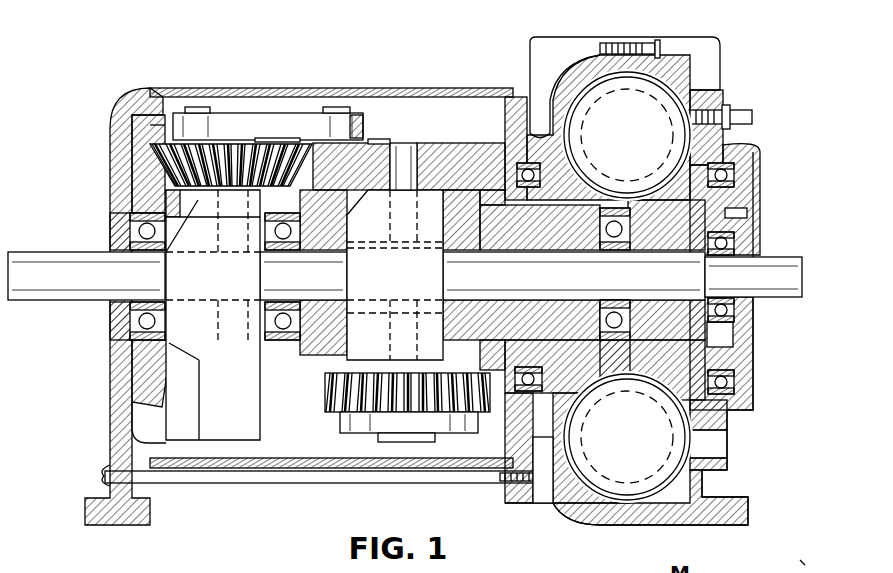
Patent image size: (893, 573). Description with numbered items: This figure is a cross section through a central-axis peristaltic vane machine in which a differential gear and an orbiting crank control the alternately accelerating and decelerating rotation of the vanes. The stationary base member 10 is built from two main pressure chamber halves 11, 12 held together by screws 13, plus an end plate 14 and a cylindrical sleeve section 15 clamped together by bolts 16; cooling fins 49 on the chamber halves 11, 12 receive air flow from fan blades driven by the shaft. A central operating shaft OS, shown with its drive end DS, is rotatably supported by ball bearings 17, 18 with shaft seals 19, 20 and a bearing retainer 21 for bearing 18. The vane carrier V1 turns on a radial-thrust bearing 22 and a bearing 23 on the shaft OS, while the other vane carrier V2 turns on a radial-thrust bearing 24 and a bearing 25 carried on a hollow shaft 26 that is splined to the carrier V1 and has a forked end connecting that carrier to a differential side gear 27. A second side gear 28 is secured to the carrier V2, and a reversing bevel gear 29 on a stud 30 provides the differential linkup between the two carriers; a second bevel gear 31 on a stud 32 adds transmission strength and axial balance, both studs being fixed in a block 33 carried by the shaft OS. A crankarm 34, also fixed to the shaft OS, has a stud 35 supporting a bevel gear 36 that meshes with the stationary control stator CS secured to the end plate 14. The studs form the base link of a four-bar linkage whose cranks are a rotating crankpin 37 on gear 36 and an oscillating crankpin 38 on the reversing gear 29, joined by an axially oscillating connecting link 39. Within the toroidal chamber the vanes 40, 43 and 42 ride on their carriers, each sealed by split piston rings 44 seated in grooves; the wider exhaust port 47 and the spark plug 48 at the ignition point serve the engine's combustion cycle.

The base member 10 is at (748, 490).
The main pressure chamber half 11 is at (735, 90).
The main pressure chamber half 12 is at (525, 92).
The screws 13 is at (657, 48).
The end plate 14 is at (110, 385).
The sleeve or cylindrical section 15 is at (400, 88).
The bolts 16 is at (238, 485).
The ball bearing 17 is at (110, 193).
The ball bearing 18 is at (765, 316).
The shaft seal 19 is at (105, 318).
The shaft seal 20 is at (770, 242).
The bearing retainer 21 is at (773, 240).
The radial-thrust bearing 22 is at (740, 166).
The bearing 23 is at (290, 343).
The radial-thrust bearing 24 is at (521, 158).
The bearing 25 is at (620, 200).
The hollow shaft 26 is at (487, 228).
The differential side gear 27 is at (330, 375).
The side gear 28 is at (490, 352).
The reversing bevel gear 29 is at (375, 144).
The stud 30 is at (405, 148).
The second bevel gear 31 is at (335, 403).
The stud 32 is at (372, 440).
The block 33 is at (360, 241).
The mounting block or crankarm 34 is at (208, 344).
The stud 35 is at (228, 140).
The bevel gear 36 is at (330, 110).
The rotating crankpin 37 is at (190, 108).
The oscillating crankpin 38 is at (342, 108).
The connecting link 39 is at (262, 140).
The vane 40 is at (614, 124).
The vane 42 is at (814, 566).
The vane 43 is at (614, 424).
The piston rings 44 is at (627, 286).
The exhaust port 47 is at (722, 442).
The spark plug 48 is at (752, 118).
The cooling fins 49 is at (560, 72).
The control stator CS is at (137, 165).
The operating shaft OS is at (50, 252).
The drive shaft DS is at (757, 390).
The vane carrier V1 is at (595, 297).
The vane carrier V2 is at (549, 190).